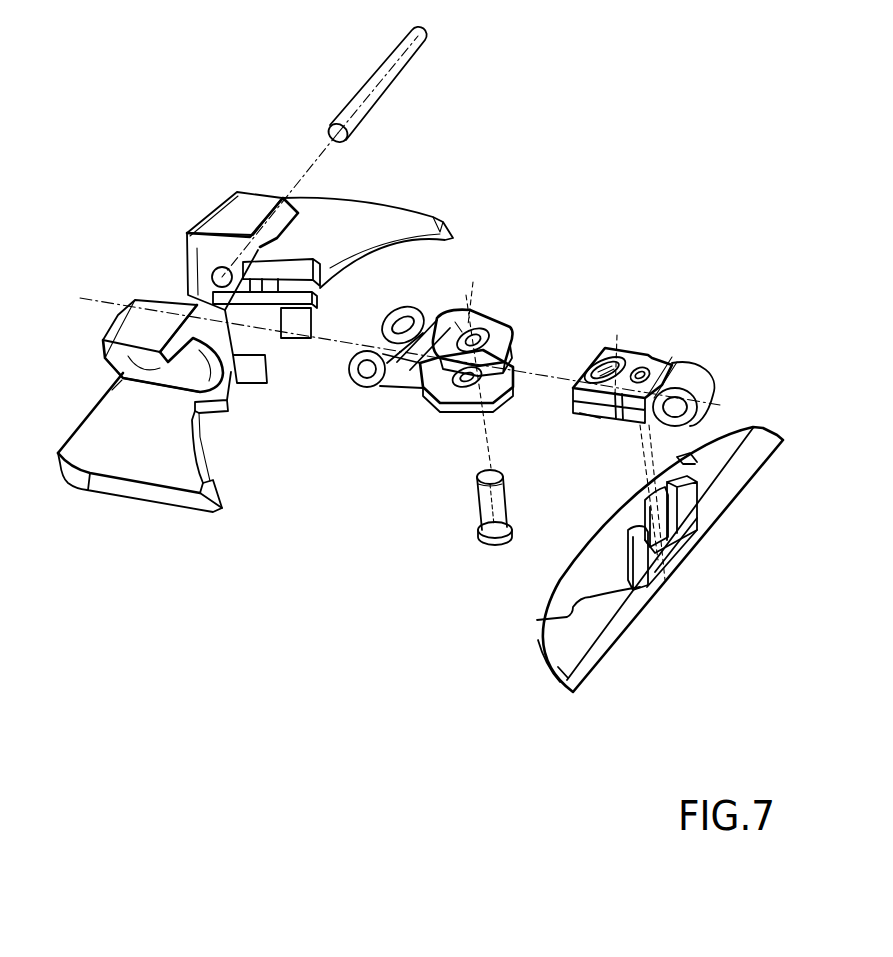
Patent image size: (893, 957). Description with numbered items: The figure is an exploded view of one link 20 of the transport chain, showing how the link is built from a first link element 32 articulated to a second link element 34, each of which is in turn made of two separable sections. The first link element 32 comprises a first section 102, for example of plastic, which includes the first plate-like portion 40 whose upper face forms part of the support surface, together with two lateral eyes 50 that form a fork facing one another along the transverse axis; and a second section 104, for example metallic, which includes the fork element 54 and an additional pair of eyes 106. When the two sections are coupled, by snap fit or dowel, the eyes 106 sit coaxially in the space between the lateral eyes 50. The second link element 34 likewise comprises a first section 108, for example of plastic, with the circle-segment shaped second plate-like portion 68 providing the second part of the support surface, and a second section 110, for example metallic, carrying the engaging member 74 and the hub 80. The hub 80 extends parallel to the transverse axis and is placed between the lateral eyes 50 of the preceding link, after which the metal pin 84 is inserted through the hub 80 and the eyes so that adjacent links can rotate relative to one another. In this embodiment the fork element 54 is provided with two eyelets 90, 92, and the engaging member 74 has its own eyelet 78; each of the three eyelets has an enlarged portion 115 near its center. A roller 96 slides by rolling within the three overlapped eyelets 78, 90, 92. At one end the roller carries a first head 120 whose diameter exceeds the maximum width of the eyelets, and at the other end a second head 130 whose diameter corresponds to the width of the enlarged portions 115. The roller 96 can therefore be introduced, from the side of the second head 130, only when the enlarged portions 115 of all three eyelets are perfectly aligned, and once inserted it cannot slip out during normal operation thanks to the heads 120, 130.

The link 20 is at (612, 163).
The first link element 32 is at (250, 393).
The second link element 34 is at (611, 606).
The first plate-like portion 40 is at (223, 526).
The lateral eyes 50 is at (117, 380).
The fork element 54 is at (505, 365).
The second plate-like portion 68 is at (510, 623).
The engaging member 74 is at (600, 416).
The eyelet 78 is at (605, 350).
The hub 80 is at (691, 335).
The metal pin 84 is at (357, 88).
The eyelet 90 is at (500, 385).
The eyelet 92 is at (472, 365).
The roller 96 is at (487, 524).
The first section 102 is at (150, 197).
The second section 104 is at (477, 330).
The eyes 106 is at (348, 370).
The first section 108 is at (616, 517).
The second section 110 is at (704, 338).
The enlarged portion 115 is at (458, 337).
The first head 120 is at (487, 537).
The second head 130 is at (480, 483).